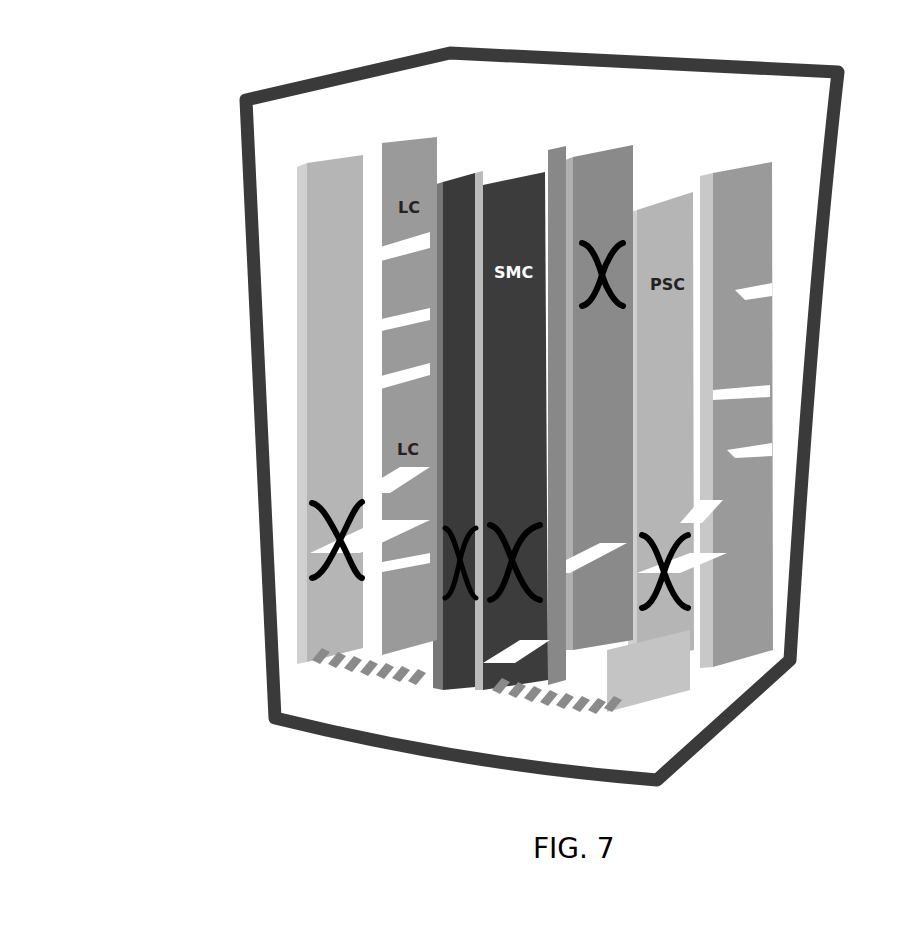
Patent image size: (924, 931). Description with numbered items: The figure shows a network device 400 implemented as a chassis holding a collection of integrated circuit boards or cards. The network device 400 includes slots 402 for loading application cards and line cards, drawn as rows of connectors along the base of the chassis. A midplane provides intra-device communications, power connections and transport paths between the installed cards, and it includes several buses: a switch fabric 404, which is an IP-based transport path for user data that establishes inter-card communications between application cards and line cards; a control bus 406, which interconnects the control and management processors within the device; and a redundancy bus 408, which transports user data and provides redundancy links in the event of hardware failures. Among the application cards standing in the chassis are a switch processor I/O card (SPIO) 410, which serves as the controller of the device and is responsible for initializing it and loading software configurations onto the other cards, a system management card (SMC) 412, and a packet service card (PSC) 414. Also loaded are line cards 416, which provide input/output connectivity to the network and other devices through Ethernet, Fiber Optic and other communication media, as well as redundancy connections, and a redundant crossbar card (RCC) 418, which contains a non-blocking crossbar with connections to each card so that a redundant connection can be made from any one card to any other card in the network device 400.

The network device 400 is at (792, 76).
The slots 402 is at (545, 700).
The switch fabric 404 is at (683, 571).
The control bus 406 is at (727, 515).
The redundancy bus 408 is at (770, 290).
The switch processor I/O card (SPIO) 410 is at (635, 172).
The system management card (SMC) 412 is at (512, 178).
The packet service card (PSC) 414 is at (302, 345).
The line cards 416 is at (747, 163).
The redundant crossbar card (RCC) 418 is at (578, 633).